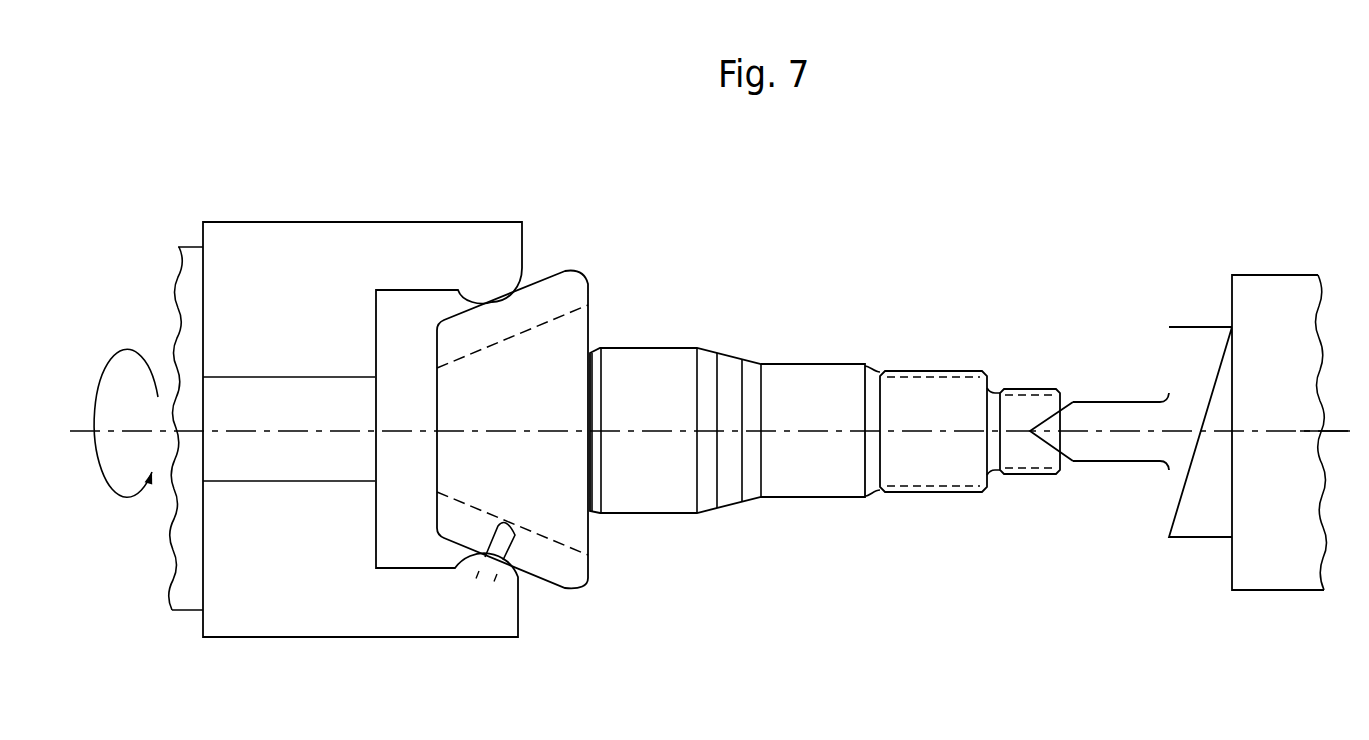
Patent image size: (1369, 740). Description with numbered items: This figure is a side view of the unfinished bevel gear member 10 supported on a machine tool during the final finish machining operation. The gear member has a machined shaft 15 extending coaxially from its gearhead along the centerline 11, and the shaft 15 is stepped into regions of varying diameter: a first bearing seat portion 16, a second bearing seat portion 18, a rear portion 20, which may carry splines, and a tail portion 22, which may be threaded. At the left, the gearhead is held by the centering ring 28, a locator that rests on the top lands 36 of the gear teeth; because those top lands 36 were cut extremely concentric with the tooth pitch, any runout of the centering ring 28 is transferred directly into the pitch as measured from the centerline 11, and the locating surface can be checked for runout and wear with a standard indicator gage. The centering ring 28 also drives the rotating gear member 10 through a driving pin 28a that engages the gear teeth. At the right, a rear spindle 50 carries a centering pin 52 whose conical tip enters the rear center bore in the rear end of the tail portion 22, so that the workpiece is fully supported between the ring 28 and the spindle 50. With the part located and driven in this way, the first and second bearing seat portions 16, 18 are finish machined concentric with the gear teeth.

The centering ring 28 is at (316, 211).
The driving pin 28a is at (505, 527).
The top lands 36 is at (543, 281).
The unfinished bevel gear member 10 is at (648, 584).
The machined shaft 15 is at (822, 508).
The first bearing seat portion 16 is at (647, 348).
The second bearing seat portion 18 is at (812, 364).
The rear portion 20 is at (935, 371).
The tail portion 22 is at (1030, 476).
The centering pin 52 is at (1114, 408).
The rear spindle 50 is at (1252, 265).
The centerline 11 is at (1340, 431).